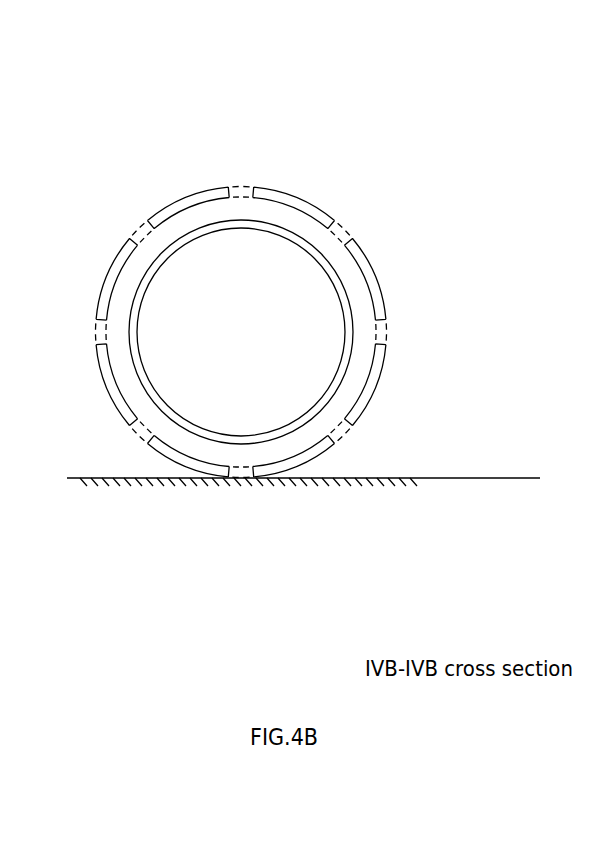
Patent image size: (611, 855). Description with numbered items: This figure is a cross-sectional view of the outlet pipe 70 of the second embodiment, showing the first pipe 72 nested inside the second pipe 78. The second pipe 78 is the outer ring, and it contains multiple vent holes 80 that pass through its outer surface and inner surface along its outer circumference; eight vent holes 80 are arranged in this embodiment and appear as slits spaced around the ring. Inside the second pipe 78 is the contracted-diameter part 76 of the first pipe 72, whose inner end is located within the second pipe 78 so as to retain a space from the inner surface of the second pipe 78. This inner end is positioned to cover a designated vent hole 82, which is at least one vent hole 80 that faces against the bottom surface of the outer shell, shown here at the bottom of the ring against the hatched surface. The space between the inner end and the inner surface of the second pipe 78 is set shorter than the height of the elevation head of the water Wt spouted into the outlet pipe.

The outlet pipe 70 is at (273, 304).
The second pipe 78 is at (183, 200).
The contracted-diameter part 76 is at (345, 380).
The first pipe 72 is at (316, 332).
The vent holes 80 is at (92, 323).
The designated vent hole 82 is at (240, 485).
The water Wt is at (392, 490).